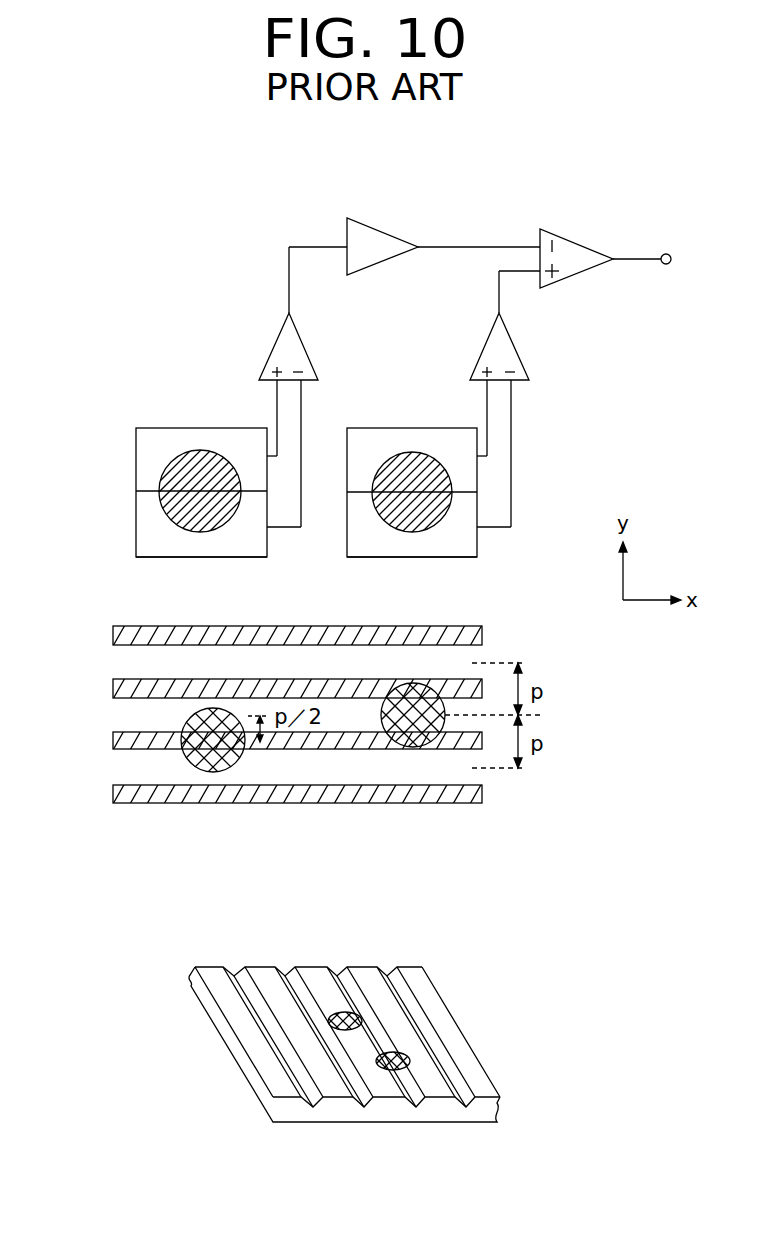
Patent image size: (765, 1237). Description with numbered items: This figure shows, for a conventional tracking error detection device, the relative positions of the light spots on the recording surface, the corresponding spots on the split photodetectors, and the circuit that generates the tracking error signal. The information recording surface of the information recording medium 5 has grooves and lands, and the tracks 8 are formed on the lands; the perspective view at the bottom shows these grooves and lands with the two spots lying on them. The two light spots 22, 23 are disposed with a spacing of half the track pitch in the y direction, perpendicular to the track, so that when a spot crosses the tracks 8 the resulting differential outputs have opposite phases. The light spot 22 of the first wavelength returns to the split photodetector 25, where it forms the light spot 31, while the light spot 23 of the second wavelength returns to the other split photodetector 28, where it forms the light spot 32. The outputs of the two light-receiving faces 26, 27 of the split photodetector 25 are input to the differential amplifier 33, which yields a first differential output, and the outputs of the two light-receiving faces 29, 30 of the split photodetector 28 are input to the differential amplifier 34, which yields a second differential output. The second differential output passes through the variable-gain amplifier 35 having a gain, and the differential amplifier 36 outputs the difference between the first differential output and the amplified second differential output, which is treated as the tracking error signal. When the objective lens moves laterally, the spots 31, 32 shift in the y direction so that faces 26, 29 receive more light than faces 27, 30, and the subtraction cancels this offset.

The information recording medium 5 is at (350, 1112).
The tracks 8 is at (118, 663).
The light spot 22 is at (375, 746).
The light spot 23 is at (240, 763).
The split photodetector 25 is at (380, 428).
The light-receiving face 26 is at (445, 430).
The light-receiving face 27 is at (465, 553).
The split photodetector 28 is at (172, 428).
The light-receiving face 29 is at (138, 458).
The light-receiving face 30 is at (138, 535).
The light spot 31 is at (410, 452).
The light spot 32 is at (213, 450).
The differential amplifier 33 is at (521, 348).
The differential amplifier 34 is at (273, 347).
The variable-gain amplifier 35 is at (388, 228).
The differential amplifier 36 is at (589, 240).